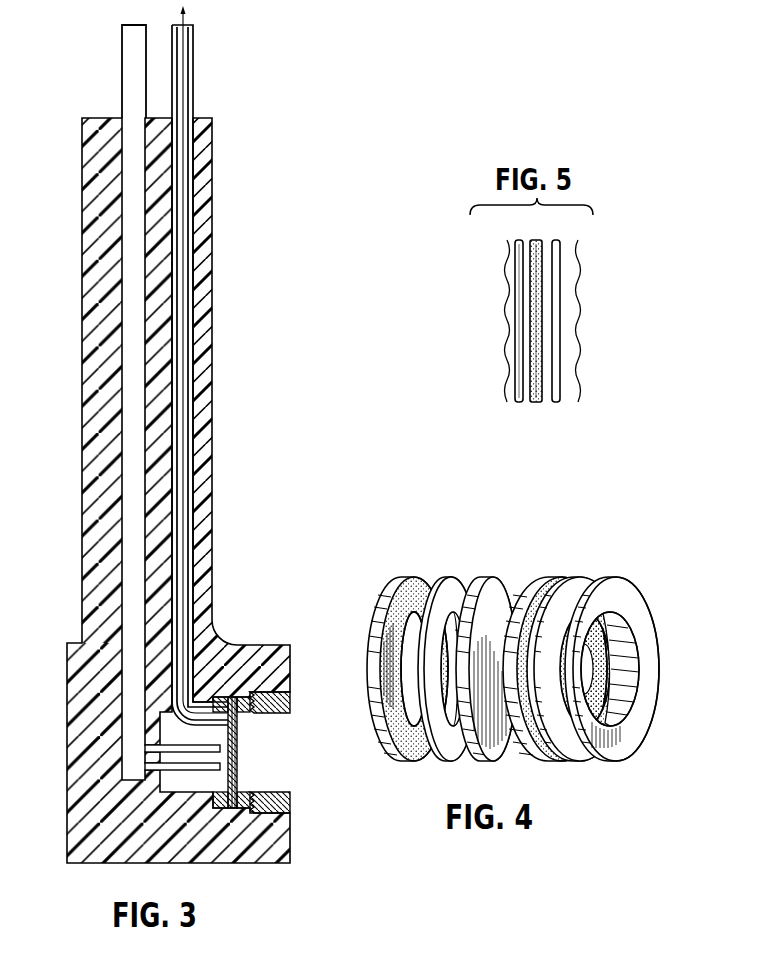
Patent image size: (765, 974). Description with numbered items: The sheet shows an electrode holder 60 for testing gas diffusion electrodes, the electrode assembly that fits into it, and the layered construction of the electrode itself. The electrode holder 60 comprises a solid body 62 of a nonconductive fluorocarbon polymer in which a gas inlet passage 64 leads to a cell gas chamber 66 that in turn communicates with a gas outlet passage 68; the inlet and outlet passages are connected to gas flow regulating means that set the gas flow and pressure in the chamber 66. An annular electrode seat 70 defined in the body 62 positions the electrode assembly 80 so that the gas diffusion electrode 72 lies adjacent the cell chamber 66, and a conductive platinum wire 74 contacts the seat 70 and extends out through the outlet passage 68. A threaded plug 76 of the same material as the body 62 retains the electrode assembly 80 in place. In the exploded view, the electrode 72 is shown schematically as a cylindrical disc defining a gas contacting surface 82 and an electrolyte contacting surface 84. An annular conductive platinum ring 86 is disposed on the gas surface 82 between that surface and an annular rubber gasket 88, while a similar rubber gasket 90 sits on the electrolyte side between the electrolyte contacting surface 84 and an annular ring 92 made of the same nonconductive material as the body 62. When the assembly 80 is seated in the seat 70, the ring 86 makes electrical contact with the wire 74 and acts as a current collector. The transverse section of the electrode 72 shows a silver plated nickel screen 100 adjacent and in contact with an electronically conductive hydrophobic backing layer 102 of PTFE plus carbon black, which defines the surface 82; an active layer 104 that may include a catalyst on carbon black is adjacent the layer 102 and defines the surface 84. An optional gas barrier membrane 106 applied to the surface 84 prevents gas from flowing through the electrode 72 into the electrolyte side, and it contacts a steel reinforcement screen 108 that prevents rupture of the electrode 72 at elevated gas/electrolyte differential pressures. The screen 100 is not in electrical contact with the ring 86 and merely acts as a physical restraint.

In FIG. 3, the electrode holder 60 is at (63, 372).
In FIG. 3, the solid body 62 is at (85, 497).
In FIG. 3, the gas inlet passage 64 is at (133, 256).
In FIG. 3, the cell gas chamber 66 is at (212, 782).
In FIG. 3, the gas outlet passage 68 is at (188, 97).
In FIG. 3, the annular electrode seat 70 is at (247, 713).
In FIG. 3, the gas diffusion electrode 72 is at (233, 696).
In FIG. 5, the gas diffusion electrode 72 is at (479, 282).
In FIG. 4, the gas diffusion electrode 72 is at (531, 652).
In FIG. 3, the conductive wire 74 is at (183, 66).
In FIG. 3, the threaded plug 76 is at (288, 697).
In FIG. 4, the electrode assembly 80 is at (521, 640).
In FIG. 3, the gas contacting surface 82 is at (222, 738).
In FIG. 5, the gas contacting surface 82 is at (517, 362).
In FIG. 4, the gas contacting surface 82 is at (473, 594).
In FIG. 3, the electrolyte contacting surface 84 is at (237, 768).
In FIG. 5, the electrolyte contacting surface 84 is at (543, 392).
In FIG. 4, the electrolyte contacting surface 84 is at (503, 626).
In FIG. 4, the annular conductive metal ring 86 is at (462, 579).
In FIG. 4, the annular rubber gasket 88 is at (432, 576).
In FIG. 4, the rubber gasket 90 is at (560, 581).
In FIG. 4, the annular ring 92 is at (633, 605).
In FIG. 5, the silver plated nickel screen 100 is at (505, 311).
In FIG. 5, the hydrophobic backing layer 102 is at (517, 242).
In FIG. 5, the active layer 104 is at (535, 242).
In FIG. 5, the gas barrier membrane 106 is at (556, 243).
In FIG. 5, the steel reinforcement screen 108 is at (578, 313).